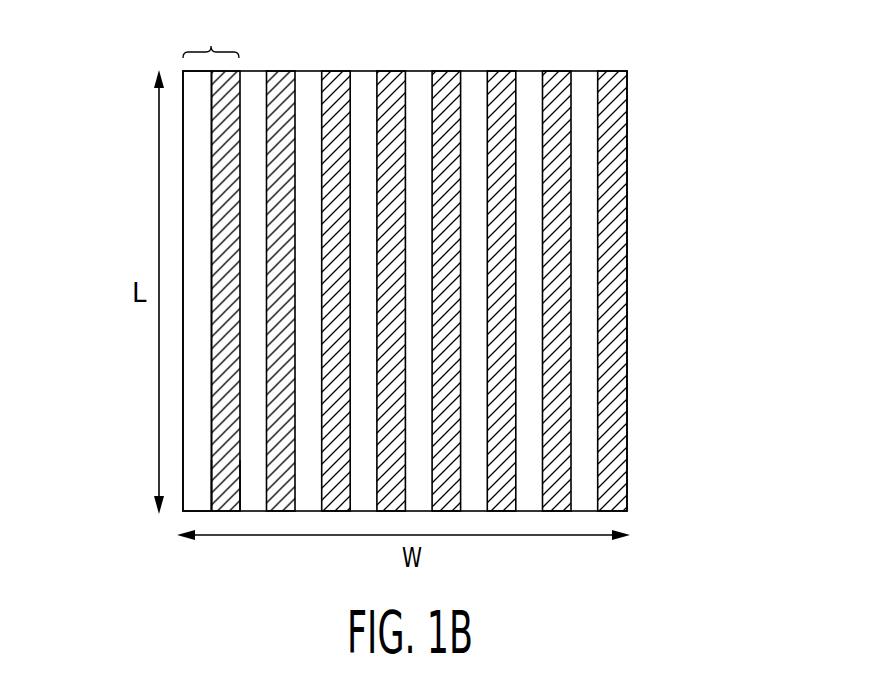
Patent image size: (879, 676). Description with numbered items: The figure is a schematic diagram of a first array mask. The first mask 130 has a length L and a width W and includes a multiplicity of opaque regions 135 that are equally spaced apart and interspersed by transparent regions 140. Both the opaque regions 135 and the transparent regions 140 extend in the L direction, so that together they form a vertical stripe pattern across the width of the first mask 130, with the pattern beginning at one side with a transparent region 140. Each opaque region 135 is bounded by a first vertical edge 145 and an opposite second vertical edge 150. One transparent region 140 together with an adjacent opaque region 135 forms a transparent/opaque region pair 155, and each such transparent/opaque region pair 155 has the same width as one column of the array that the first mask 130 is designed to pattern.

The first mask 130 is at (686, 100).
The opaque region 135 is at (225, 91).
The transparent region 140 is at (193, 156).
The first vertical edge 145 is at (213, 486).
The second vertical edge 150 is at (242, 485).
The transparent/opaque region pair 155 is at (211, 33).